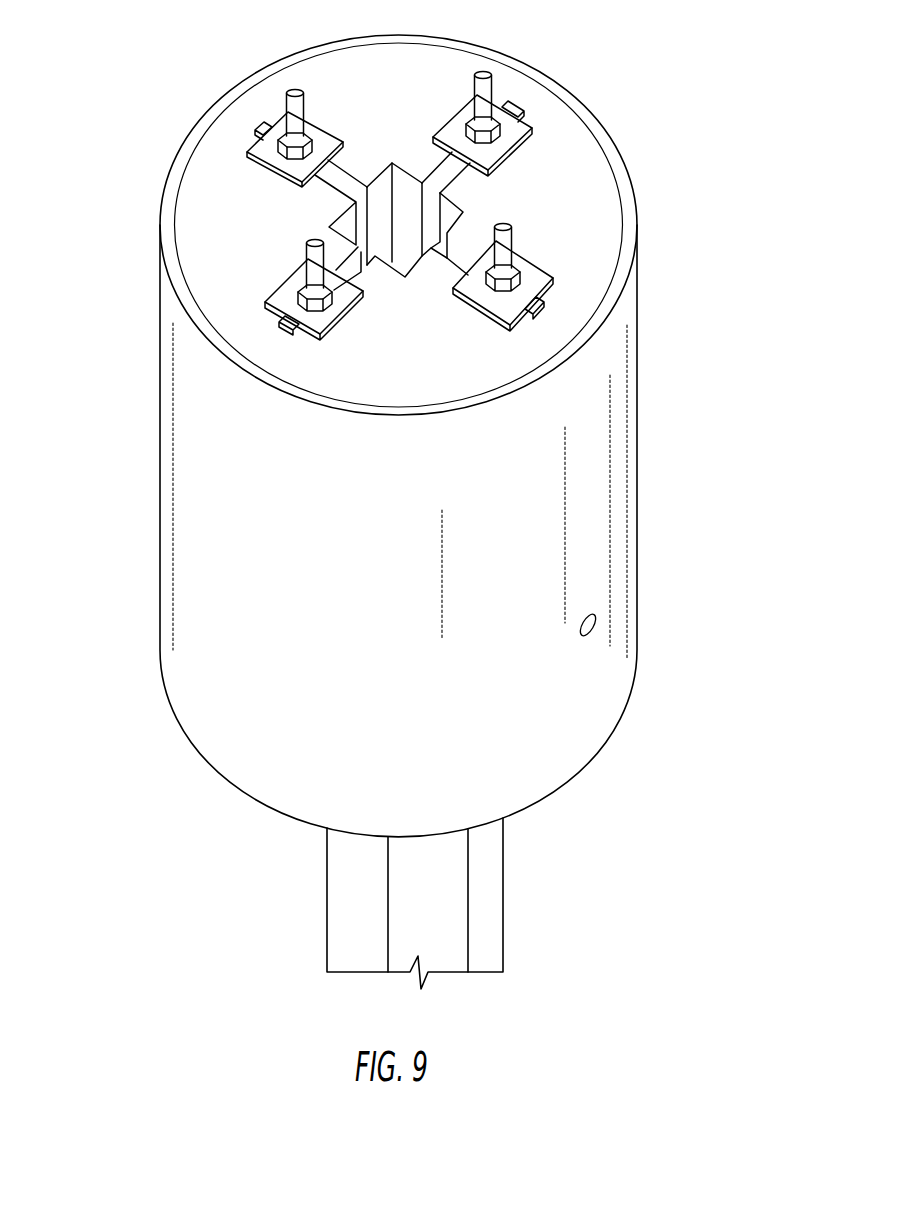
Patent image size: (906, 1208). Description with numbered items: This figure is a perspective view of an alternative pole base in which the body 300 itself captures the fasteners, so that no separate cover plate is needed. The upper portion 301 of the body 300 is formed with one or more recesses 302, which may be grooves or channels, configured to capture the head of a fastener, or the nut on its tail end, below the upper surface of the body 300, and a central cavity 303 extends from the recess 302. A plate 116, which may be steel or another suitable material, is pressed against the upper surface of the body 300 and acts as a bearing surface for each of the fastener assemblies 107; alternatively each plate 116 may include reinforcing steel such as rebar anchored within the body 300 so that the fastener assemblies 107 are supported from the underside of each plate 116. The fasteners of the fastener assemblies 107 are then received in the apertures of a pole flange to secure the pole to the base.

The fastener assembly 107 is at (312, 133).
The plate 116 is at (282, 298).
The body 300 is at (603, 517).
The upper portion 301 is at (613, 363).
The recess 302 is at (448, 169).
The central cavity 303 is at (407, 208).